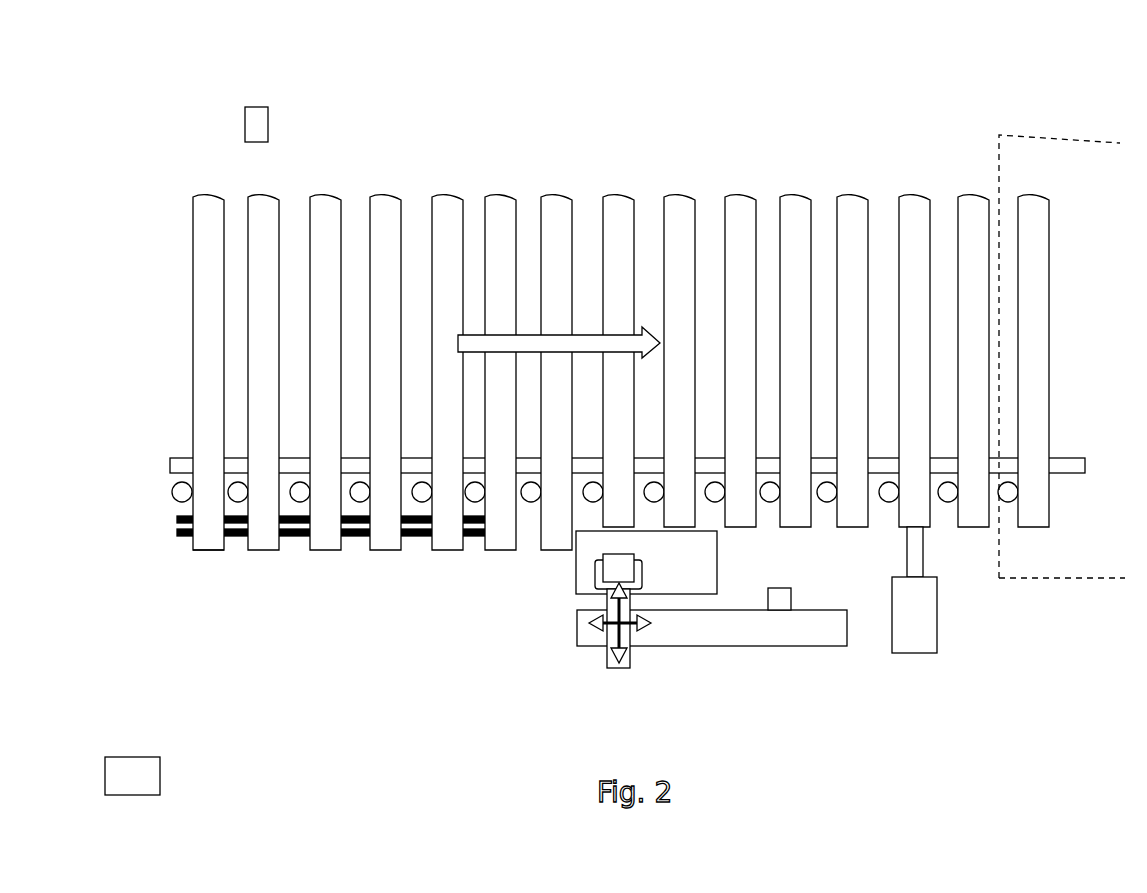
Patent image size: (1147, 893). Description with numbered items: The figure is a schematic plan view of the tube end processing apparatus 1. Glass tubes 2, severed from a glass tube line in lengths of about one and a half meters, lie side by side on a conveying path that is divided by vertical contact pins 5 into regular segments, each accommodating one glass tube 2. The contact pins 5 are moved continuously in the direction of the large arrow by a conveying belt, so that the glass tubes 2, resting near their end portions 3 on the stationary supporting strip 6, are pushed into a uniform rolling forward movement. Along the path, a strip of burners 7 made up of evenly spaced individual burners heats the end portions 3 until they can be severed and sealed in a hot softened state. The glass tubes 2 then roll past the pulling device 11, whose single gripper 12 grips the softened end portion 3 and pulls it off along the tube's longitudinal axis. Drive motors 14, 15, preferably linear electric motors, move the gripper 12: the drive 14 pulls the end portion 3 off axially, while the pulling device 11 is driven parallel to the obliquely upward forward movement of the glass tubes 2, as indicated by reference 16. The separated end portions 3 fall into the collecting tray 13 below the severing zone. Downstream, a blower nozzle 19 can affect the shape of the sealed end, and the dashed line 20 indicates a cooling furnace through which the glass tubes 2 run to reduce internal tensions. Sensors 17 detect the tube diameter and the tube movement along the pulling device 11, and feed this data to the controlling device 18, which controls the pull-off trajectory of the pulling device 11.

The tube end processing apparatus 1 is at (676, 114).
The glass tube 2 is at (200, 375).
The end portion 3 is at (200, 553).
The contact pin 5 is at (170, 492).
The supporting strip 6 is at (180, 458).
The strip of burners 7 is at (297, 537).
The pulling device 11 is at (672, 637).
The gripper 12 is at (618, 574).
The collecting tray 13 is at (703, 570).
The drive motor 14 is at (616, 668).
The drive motor 15 is at (792, 597).
The obliquely upward x-direction movement 16 is at (737, 646).
The sensor 17 is at (270, 125).
The controlling device 18 is at (145, 773).
The blower nozzle 19 is at (930, 610).
The cooling furnace 20 is at (1078, 140).